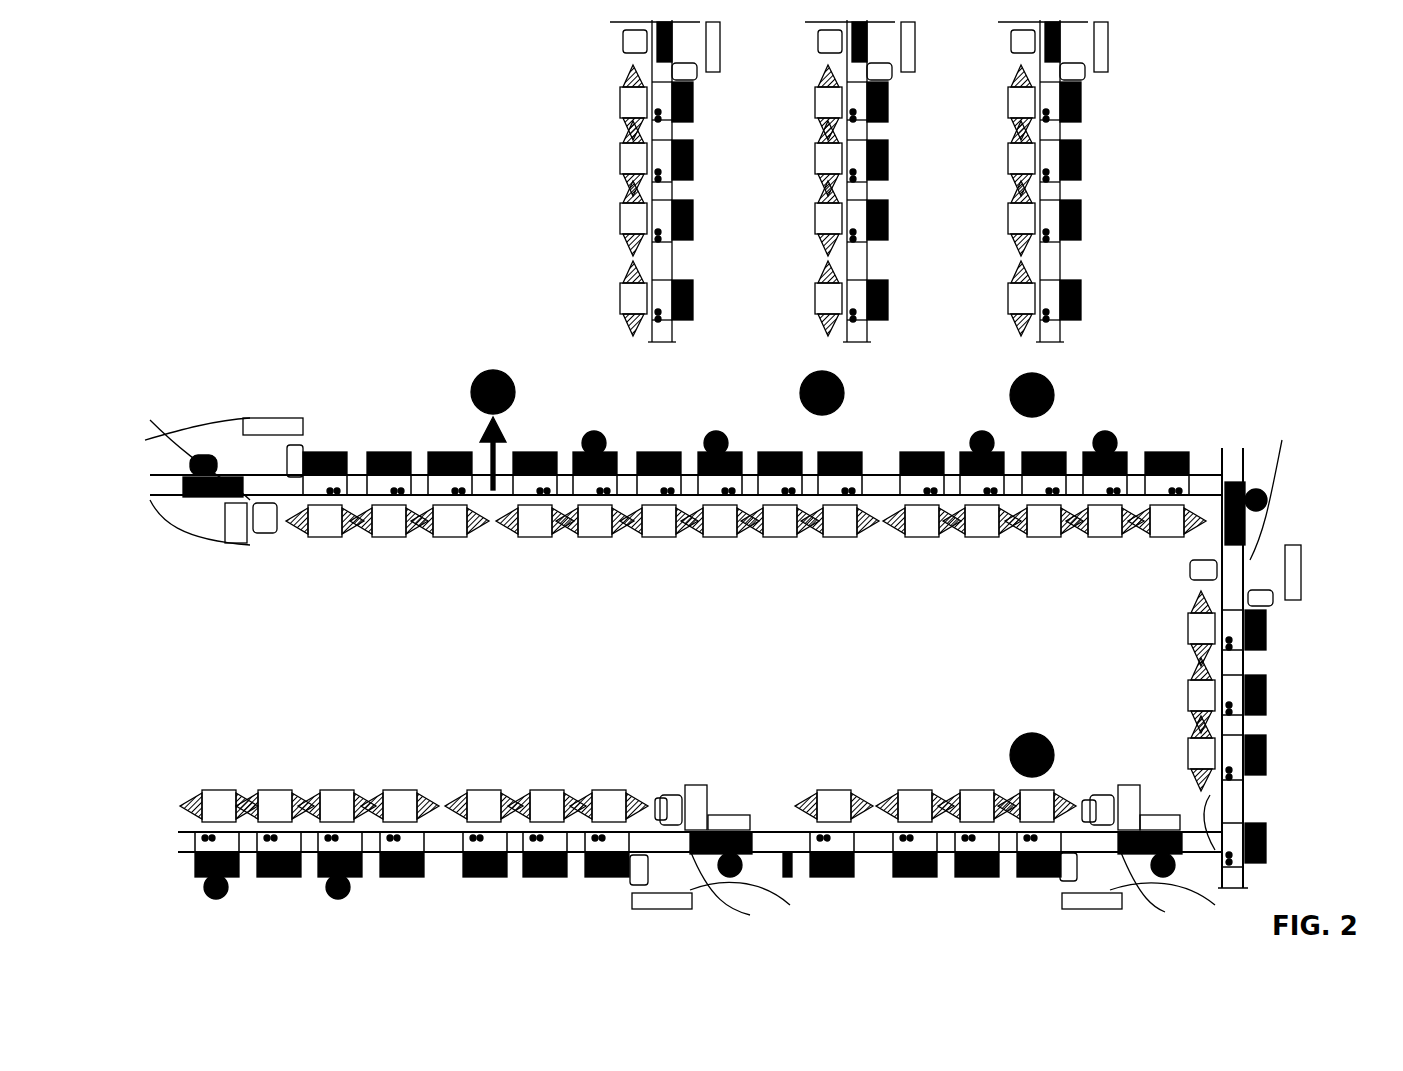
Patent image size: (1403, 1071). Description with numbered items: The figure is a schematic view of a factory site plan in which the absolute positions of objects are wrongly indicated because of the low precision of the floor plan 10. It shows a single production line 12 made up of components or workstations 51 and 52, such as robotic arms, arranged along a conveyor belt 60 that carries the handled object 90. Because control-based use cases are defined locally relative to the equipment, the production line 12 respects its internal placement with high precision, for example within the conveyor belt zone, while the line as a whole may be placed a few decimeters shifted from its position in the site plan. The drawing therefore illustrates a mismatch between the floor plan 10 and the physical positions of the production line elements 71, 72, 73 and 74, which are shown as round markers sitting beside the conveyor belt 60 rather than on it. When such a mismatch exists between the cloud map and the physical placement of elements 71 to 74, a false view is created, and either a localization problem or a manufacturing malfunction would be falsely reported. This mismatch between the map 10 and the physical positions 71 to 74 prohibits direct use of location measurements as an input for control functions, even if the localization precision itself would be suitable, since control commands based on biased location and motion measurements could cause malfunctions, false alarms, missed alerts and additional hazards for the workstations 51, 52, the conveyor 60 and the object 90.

The floor plan 10 is at (1263, 210).
The production line 12 is at (295, 563).
The workstation 51 is at (555, 783).
The workstation 52 is at (820, 789).
The conveyor belt 60 is at (440, 858).
The production line element position 71 is at (467, 372).
The production line element position 72 is at (802, 397).
The production line element position 73 is at (1015, 412).
The production line element position 74 is at (1025, 730).
The object 90 is at (552, 845).